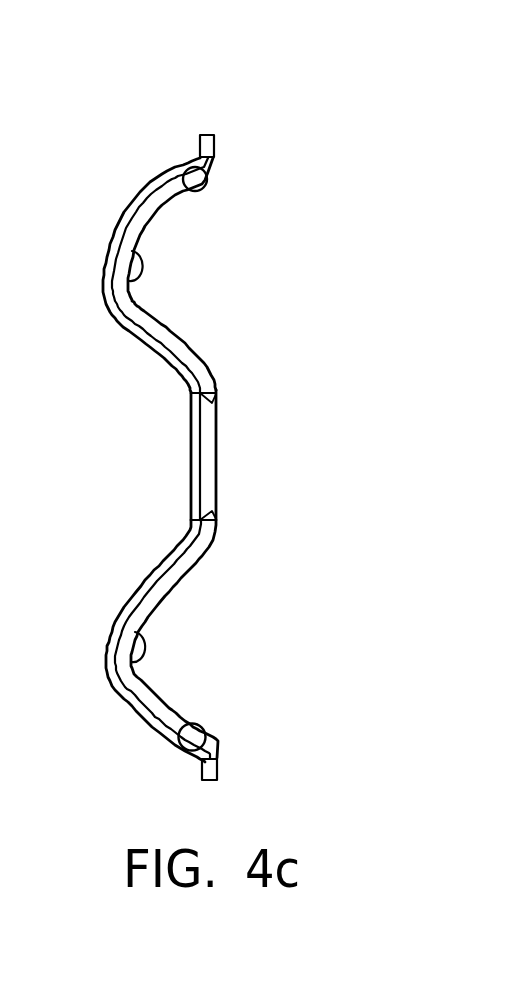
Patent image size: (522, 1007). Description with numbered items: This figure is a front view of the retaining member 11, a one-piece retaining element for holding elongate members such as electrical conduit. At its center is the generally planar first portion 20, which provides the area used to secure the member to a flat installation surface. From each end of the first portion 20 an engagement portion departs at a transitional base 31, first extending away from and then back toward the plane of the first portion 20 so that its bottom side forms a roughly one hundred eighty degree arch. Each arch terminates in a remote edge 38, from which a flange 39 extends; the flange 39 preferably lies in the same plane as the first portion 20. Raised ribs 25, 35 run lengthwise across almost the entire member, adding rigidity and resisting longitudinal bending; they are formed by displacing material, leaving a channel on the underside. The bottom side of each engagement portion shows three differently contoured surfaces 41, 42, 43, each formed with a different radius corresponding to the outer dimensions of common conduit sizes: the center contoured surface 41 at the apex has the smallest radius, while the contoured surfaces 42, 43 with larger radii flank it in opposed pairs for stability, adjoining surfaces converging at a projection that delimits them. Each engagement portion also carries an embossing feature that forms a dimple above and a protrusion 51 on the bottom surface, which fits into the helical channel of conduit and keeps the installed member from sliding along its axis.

The retaining member 11 is at (80, 181).
The first portion 20 is at (190, 427).
The raised rib 25 is at (190, 475).
The transitional base 31 is at (190, 386).
The raised rib 35 is at (158, 562).
The remote edge 38 is at (199, 158).
The flange 39 is at (207, 134).
The contoured surface 41 is at (203, 189).
The contoured surface 42 is at (145, 213).
The contoured surface 43 is at (133, 252).
The protrusion 51 is at (207, 181).